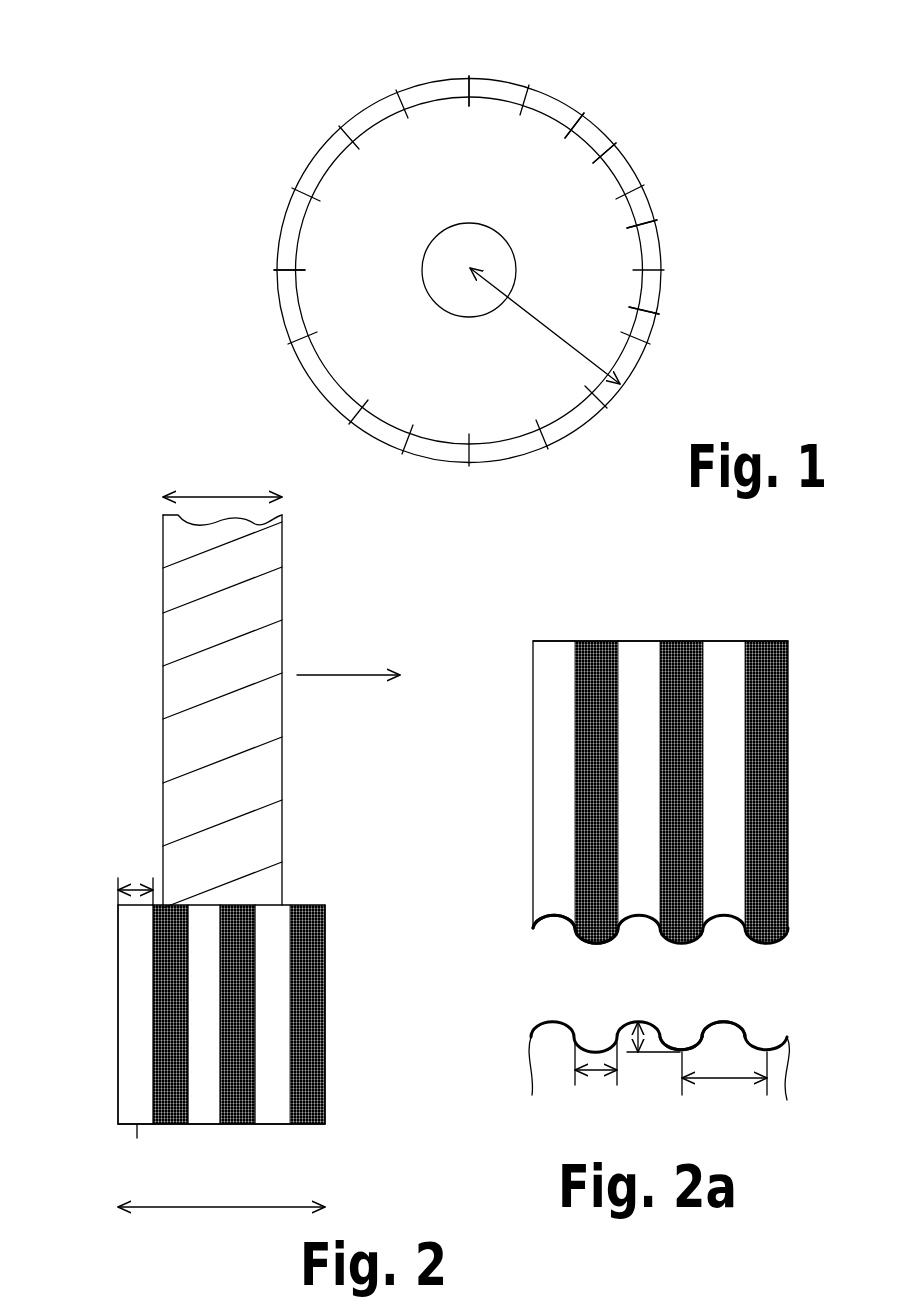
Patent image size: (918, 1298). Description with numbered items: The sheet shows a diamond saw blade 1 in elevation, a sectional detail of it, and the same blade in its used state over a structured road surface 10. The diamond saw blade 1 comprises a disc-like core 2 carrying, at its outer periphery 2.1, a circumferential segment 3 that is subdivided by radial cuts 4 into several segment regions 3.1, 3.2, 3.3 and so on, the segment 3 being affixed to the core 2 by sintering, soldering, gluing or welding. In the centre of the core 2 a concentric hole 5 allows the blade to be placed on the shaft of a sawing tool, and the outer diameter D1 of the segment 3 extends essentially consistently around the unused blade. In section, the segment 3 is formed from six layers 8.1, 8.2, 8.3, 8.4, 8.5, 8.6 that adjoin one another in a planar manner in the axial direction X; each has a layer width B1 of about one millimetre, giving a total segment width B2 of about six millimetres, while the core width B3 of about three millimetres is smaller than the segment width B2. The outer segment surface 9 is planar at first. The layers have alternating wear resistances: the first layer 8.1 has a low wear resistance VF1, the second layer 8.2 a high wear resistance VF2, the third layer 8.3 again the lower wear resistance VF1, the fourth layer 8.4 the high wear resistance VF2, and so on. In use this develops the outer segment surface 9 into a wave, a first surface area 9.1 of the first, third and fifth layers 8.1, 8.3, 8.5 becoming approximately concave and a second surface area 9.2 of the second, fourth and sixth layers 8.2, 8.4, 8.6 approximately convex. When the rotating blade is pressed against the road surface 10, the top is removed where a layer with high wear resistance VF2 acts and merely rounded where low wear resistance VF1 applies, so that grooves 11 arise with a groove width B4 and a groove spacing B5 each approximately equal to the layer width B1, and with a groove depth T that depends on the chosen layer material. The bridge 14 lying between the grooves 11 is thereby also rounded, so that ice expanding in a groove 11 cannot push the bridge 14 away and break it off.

In FIG. 1, the diamond saw blade 1 is at (297, 131).
In FIG. 2, the diamond saw blade 1 is at (313, 603).
In FIG. 1, the disc-like core 2 is at (402, 145).
In FIG. 2, the disc-like core 2 is at (163, 592).
In FIG. 1, the outer periphery 2.1 is at (300, 240).
In FIG. 1, the circumferential segment 3 is at (487, 97).
In FIG. 2, the circumferential segment 3 is at (323, 905).
In FIG. 2A, the circumferential segment 3 is at (790, 757).
In FIG. 1, the segment region 3.1 is at (613, 147).
In FIG. 1, the segment region 3.2 is at (645, 222).
In FIG. 1, the segment region 3.3 is at (645, 312).
In FIG. 1, the radial cut 4 is at (540, 97).
In FIG. 1, the concentric hole 5 is at (465, 290).
In FIG. 1, the outer diameter D1 is at (533, 318).
In FIG. 2, the first layer 8.1 is at (123, 1032).
In FIG. 2, the second layer 8.2 is at (160, 1112).
In FIG. 2, the third layer 8.3 is at (199, 1113).
In FIG. 2, the fourth layer 8.4 is at (238, 1113).
In FIG. 2, the fifth layer 8.5 is at (285, 1114).
In FIG. 2, the sixth layer 8.6 is at (322, 1072).
In FIG. 2, the outer segment surface 9 is at (135, 1137).
In FIG. 2A, the outer segment surface 9 is at (780, 944).
In FIG. 2A, the first surface area 9.1 is at (555, 921).
In FIG. 2A, the second surface area 9.2 is at (595, 948).
In FIG. 2A, the road surface 10 is at (780, 1083).
In FIG. 2A, the groove 11 is at (681, 1040).
In FIG. 2A, the bridge 14 is at (725, 1030).
In FIG. 2A, the groove depth T is at (637, 1035).
In FIG. 2, the layer width B1 is at (130, 888).
In FIG. 2, the segment width B2 is at (278, 1207).
In FIG. 2, the core width B3 is at (262, 495).
In FIG. 2A, the groove width B4 is at (595, 1073).
In FIG. 2A, the groove spacing B5 is at (716, 1082).
In FIG. 2, the axial direction X is at (325, 678).
In FIG. 2A, the low wear resistance VF1 is at (720, 652).
In FIG. 2A, the high wear resistance VF2 is at (768, 655).